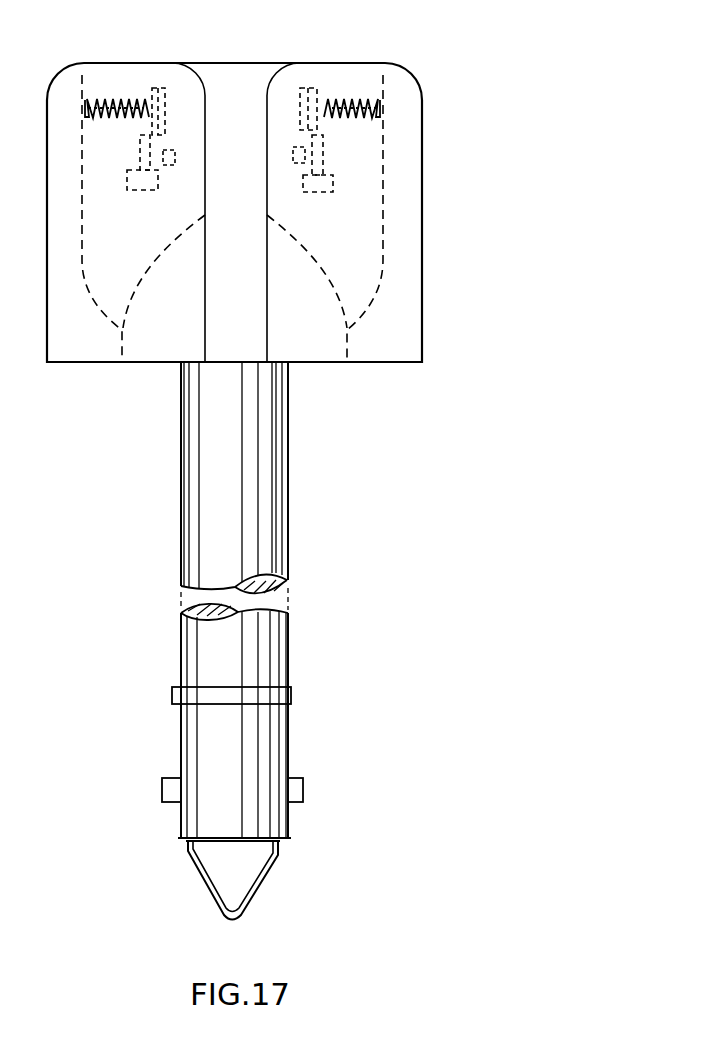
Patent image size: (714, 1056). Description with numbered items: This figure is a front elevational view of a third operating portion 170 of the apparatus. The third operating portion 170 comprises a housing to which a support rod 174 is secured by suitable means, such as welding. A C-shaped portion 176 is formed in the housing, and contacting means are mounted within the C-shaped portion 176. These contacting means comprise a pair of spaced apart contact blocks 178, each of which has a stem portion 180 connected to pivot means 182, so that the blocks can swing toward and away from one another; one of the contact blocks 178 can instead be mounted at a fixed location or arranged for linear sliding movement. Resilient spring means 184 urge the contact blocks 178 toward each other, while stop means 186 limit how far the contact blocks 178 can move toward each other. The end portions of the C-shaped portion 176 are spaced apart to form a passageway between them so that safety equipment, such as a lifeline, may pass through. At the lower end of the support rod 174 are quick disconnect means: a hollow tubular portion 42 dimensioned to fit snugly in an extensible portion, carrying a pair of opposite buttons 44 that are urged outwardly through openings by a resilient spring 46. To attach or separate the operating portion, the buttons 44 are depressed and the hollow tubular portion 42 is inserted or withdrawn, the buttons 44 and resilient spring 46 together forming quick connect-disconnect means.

The third operating portion 170 is at (339, 471).
The C-shaped portion 176 is at (414, 172).
The resilient spring means 184 is at (113, 104).
The contact blocks 178 is at (288, 106).
The stem portion 180 is at (310, 136).
The stop means 186 is at (294, 153).
The pivot means 182 is at (304, 182).
The support rod 174 is at (268, 508).
The hollow tubular portion 42 is at (287, 746).
The buttons 44 is at (176, 794).
The resilient spring 46 is at (260, 893).